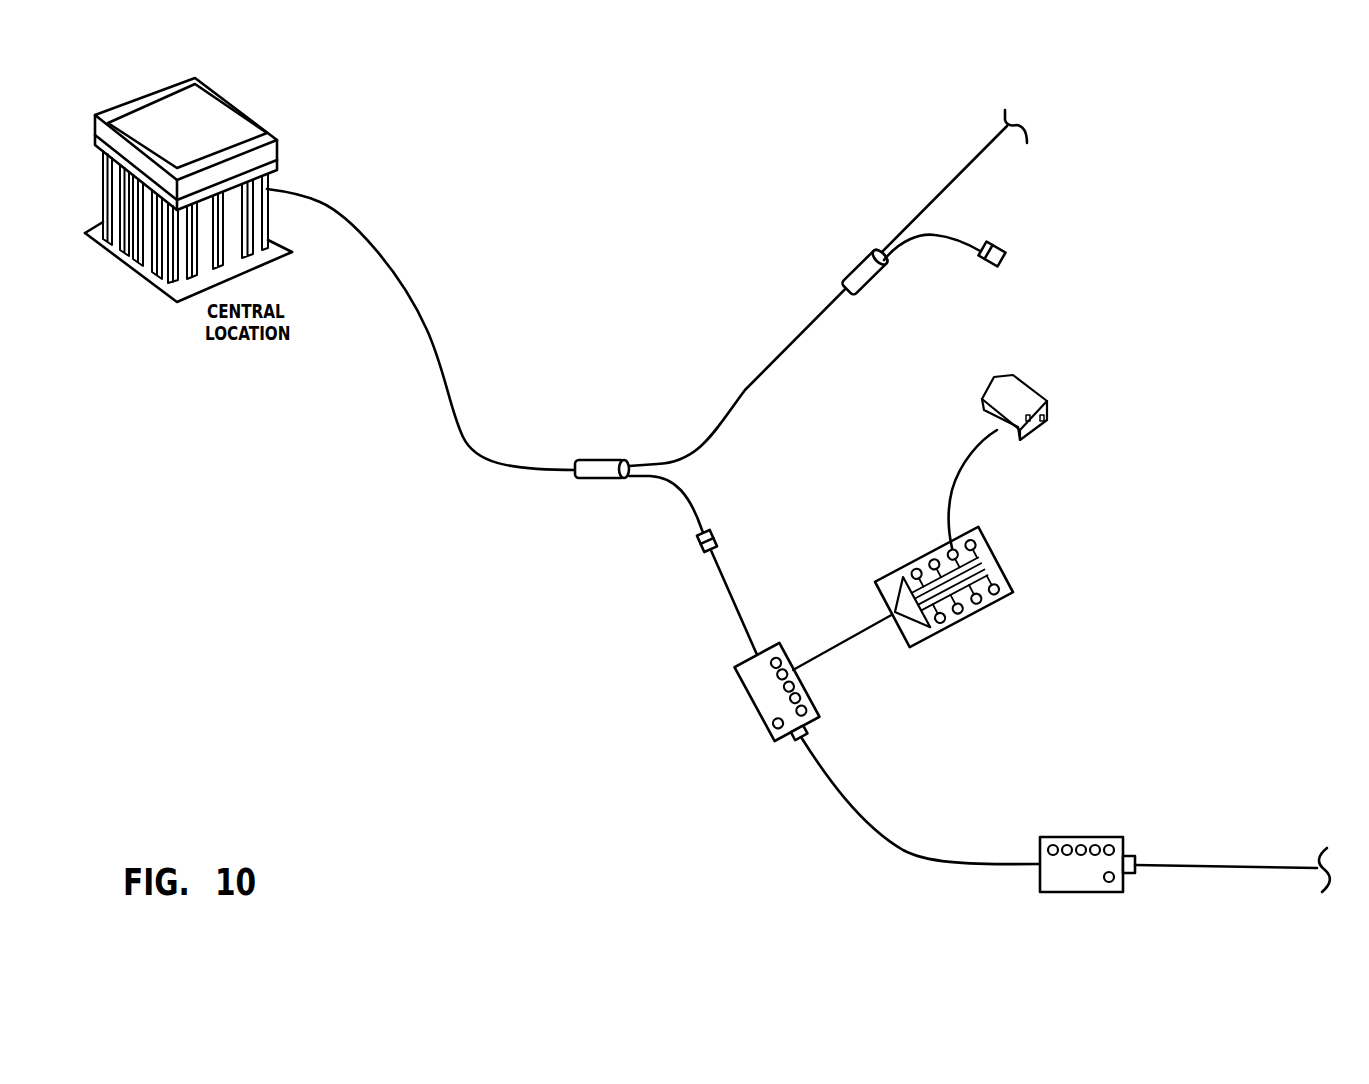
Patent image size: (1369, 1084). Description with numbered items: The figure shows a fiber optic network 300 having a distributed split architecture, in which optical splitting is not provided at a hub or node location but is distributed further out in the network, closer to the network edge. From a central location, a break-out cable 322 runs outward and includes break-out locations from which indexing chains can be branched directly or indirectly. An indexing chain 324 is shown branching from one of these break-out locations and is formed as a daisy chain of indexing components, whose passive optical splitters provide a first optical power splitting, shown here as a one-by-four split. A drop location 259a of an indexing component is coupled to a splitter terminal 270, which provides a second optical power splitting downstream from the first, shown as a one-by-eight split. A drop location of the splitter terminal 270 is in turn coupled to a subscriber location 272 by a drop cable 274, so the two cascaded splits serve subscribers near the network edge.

The fiber optic network 300 is at (672, 302).
The break-out cable 322 is at (457, 437).
The indexing chain 324 is at (728, 600).
The drop location 259a is at (790, 677).
The splitter terminal 270 is at (892, 572).
The subscriber location 272 is at (1030, 390).
The drop cable 274 is at (962, 460).